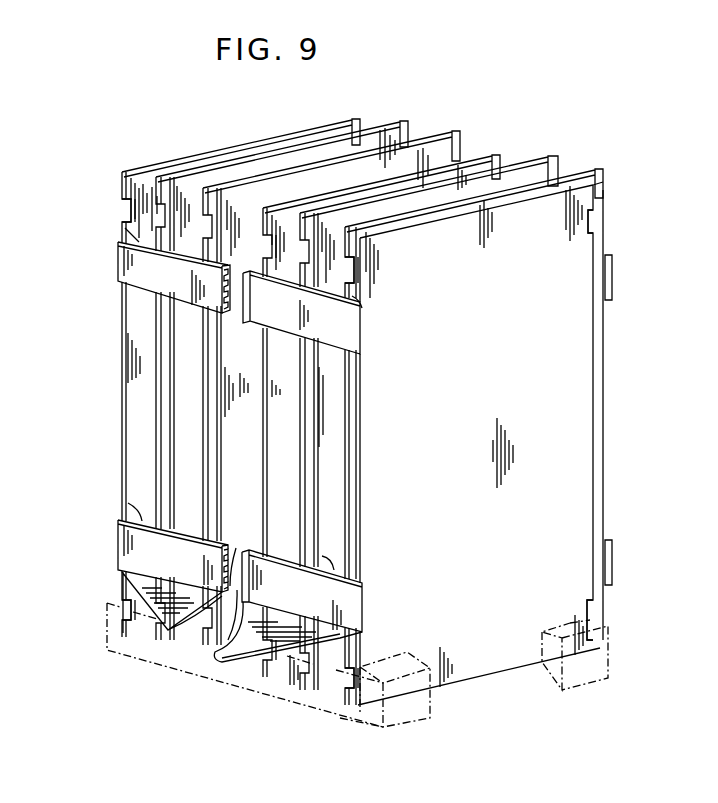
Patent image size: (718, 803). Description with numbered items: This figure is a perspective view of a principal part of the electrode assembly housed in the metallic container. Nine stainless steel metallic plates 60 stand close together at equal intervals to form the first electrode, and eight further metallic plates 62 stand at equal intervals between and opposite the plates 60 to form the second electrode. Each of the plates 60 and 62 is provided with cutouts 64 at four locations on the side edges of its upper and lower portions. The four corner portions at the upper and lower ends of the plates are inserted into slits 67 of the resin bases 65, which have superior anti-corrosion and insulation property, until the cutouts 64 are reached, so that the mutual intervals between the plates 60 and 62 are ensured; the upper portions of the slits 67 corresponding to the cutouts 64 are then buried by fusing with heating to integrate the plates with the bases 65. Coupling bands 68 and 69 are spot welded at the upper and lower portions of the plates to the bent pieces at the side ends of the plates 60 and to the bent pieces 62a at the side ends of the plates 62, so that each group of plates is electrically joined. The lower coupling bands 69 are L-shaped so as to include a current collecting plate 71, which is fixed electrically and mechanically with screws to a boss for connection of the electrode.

The metallic plate 60 is at (447, 138).
The metallic plate 62 is at (257, 162).
The bent piece 62a is at (140, 238).
The cutout 64 is at (121, 188).
The base 65 is at (610, 668).
The slit 67 is at (403, 673).
The coupling band 68 is at (138, 274).
The coupling band 69 is at (150, 547).
The current collecting plate 71 is at (237, 648).